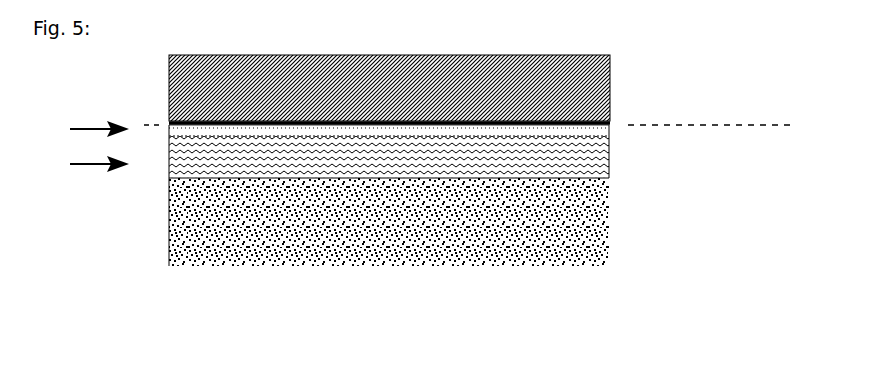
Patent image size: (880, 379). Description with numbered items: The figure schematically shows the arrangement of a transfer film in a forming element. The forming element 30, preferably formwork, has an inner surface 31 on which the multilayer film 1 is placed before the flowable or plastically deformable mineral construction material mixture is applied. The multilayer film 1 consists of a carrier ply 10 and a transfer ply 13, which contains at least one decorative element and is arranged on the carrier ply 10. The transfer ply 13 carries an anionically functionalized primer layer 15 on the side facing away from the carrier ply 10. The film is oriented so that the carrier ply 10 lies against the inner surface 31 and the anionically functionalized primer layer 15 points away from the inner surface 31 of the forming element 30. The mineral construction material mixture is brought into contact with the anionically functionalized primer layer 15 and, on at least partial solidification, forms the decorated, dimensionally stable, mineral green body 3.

The forming element 30 is at (590, 51).
The inner surface 31 is at (616, 114).
The multilayer film 1 is at (620, 118).
The anionically functionalized primer layer 15 is at (584, 154).
The decorated, dimensionally stable, mineral green body 3 is at (611, 274).
The carrier ply 10 is at (82, 129).
The transfer ply 13 is at (82, 164).